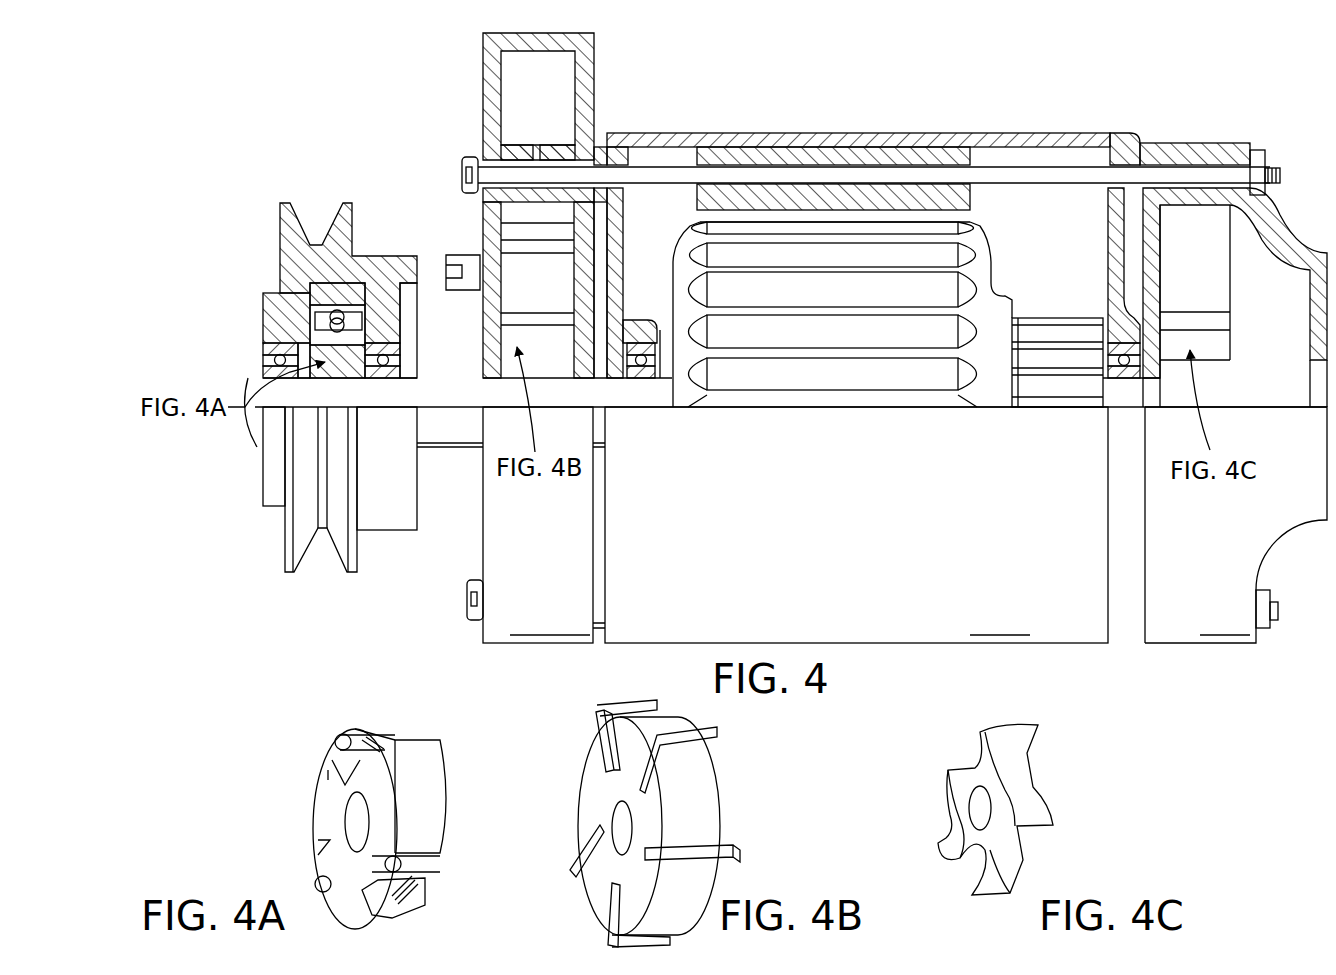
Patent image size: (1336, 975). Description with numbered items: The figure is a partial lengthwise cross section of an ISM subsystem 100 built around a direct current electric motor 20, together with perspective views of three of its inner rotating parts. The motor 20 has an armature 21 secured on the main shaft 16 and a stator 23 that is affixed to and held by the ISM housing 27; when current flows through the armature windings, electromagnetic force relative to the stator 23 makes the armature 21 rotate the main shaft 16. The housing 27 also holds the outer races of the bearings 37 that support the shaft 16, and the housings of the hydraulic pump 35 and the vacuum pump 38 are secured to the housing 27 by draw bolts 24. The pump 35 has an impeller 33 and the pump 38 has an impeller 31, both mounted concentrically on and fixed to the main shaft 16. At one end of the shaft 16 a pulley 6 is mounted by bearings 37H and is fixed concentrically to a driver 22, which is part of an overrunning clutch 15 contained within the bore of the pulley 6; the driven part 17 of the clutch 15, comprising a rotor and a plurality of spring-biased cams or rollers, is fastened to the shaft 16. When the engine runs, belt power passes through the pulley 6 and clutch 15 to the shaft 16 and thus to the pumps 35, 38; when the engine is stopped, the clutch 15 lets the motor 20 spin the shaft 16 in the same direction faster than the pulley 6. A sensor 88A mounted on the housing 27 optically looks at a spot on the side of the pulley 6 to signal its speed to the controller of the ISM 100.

In FIG. 4, the pulley 6 is at (280, 231).
In FIG. 4, the overrunning clutch 15 is at (297, 320).
In FIG. 4, the main shaft 16 is at (451, 433).
In FIG. 4A, the driven part 17 is at (322, 812).
In FIG. 4, the direct current electric motor 20 is at (877, 118).
In FIG. 4, the armature 21 is at (1003, 303).
In FIG. 4, the driver 22 is at (312, 290).
In FIG. 4, the stator 23 is at (963, 200).
In FIG. 4, the draw bolts 24 is at (464, 160).
In FIG. 4, the ISM housing 27 is at (680, 135).
In FIG. 4B, the impeller 31 is at (707, 820).
In FIG. 4C, the impeller 33 is at (1020, 785).
In FIG. 4, the hydraulic pump 35 is at (472, 235).
In FIG. 4, the bearings 37 is at (640, 380).
In FIG. 4, the bearings 37H is at (265, 349).
In FIG. 4, the vacuum pump 38 is at (1293, 182).
In FIG. 4, the sensor 88A is at (467, 265).
In FIG. 4, the ISM subsystem 100 is at (882, 657).